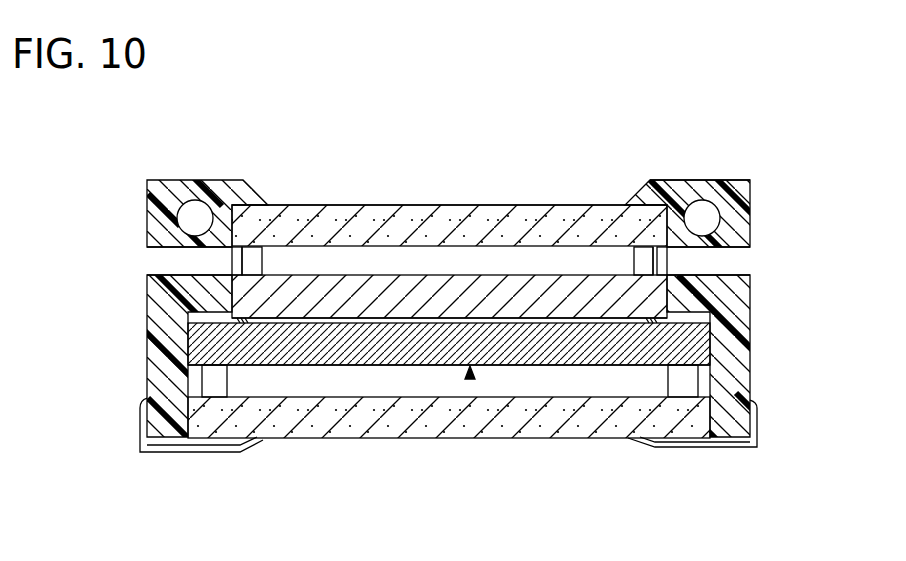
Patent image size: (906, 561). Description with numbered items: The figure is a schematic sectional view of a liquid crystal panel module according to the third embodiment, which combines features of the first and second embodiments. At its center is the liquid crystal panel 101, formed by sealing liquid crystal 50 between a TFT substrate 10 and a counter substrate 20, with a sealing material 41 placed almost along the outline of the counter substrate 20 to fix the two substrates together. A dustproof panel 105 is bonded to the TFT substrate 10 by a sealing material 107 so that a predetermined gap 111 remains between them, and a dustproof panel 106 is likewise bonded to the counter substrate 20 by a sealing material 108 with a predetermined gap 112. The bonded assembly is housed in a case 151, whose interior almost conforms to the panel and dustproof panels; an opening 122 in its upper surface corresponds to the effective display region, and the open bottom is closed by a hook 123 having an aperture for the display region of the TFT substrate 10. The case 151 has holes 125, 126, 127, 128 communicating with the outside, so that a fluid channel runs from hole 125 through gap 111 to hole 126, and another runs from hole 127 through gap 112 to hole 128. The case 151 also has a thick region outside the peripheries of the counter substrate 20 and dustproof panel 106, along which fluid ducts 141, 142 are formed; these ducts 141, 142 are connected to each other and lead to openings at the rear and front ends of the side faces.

The TFT substrate 10 is at (390, 366).
The counter substrate 20 is at (450, 288).
The sealing material 41 is at (667, 320).
The liquid crystal 50 is at (505, 293).
The liquid crystal panel 101 is at (470, 376).
The dustproof panel 105 is at (562, 438).
The dustproof panel 106 is at (587, 213).
The sealing material 107 is at (700, 380).
The sealing material 108 is at (667, 260).
The gap 111 is at (307, 385).
The gap 112 is at (368, 262).
The opening 122 is at (257, 194).
The hook 123 is at (175, 453).
The hole 125 is at (165, 370).
The hole 126 is at (745, 392).
The hole 127 is at (178, 256).
The hole 128 is at (737, 254).
The fluid duct 141 is at (193, 180).
The fluid duct 142 is at (738, 181).
The case 151 is at (707, 180).